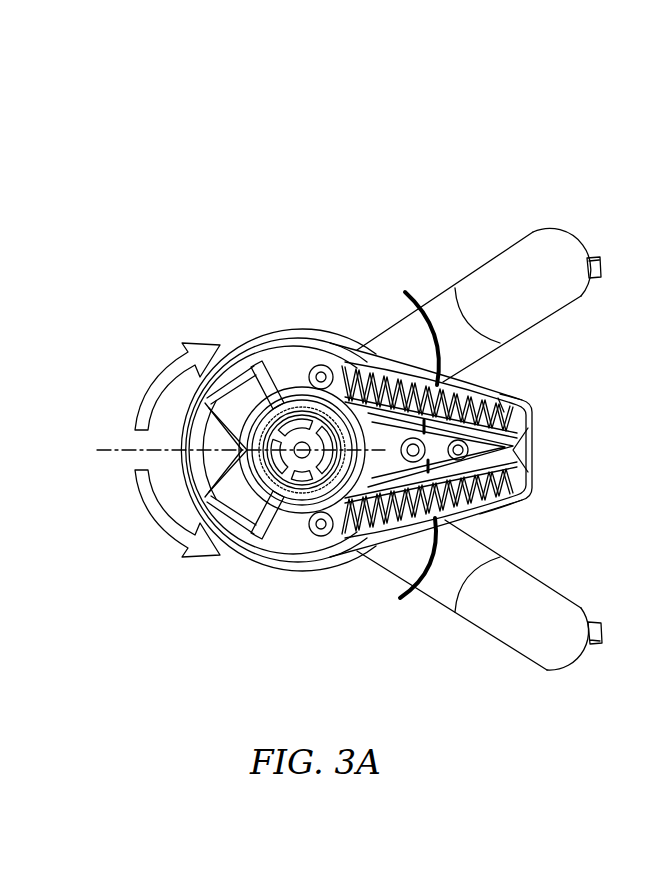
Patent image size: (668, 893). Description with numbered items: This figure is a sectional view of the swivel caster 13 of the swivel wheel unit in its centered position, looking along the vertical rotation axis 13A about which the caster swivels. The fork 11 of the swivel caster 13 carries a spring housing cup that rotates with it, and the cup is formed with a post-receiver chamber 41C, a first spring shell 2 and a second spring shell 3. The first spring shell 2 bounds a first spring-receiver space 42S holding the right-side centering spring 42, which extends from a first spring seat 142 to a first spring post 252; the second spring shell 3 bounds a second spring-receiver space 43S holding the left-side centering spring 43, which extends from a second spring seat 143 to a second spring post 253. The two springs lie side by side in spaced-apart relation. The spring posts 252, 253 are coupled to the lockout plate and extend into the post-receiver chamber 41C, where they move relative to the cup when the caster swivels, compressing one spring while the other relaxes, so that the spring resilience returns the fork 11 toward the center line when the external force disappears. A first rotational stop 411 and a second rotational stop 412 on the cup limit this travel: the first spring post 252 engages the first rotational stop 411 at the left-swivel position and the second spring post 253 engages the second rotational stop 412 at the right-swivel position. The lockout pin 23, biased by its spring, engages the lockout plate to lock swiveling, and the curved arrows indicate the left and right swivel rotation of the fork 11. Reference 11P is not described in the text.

The fork 11 is at (503, 292).
The swivel caster 13 is at (554, 229).
The vertical rotation axis 13A is at (302, 448).
The pivot 11P is at (262, 494).
The second rotational stop 412 is at (256, 364).
The first rotational stop 411 is at (257, 532).
The post-receiver chamber 41C is at (228, 396).
The second spring post 253 is at (320, 366).
The first spring post 252 is at (320, 538).
The lockout pin 23 is at (499, 404).
The second spring-receiver space 43S is at (517, 397).
The left-side centering spring 43 is at (531, 418).
The second spring seat 143 is at (527, 433).
The first spring seat 142 is at (527, 473).
The right-side centering spring 42 is at (530, 493).
The first spring-receiver space 42S is at (491, 514).
The first spring shell 2 is at (413, 335).
The second spring shell 3 is at (410, 568).